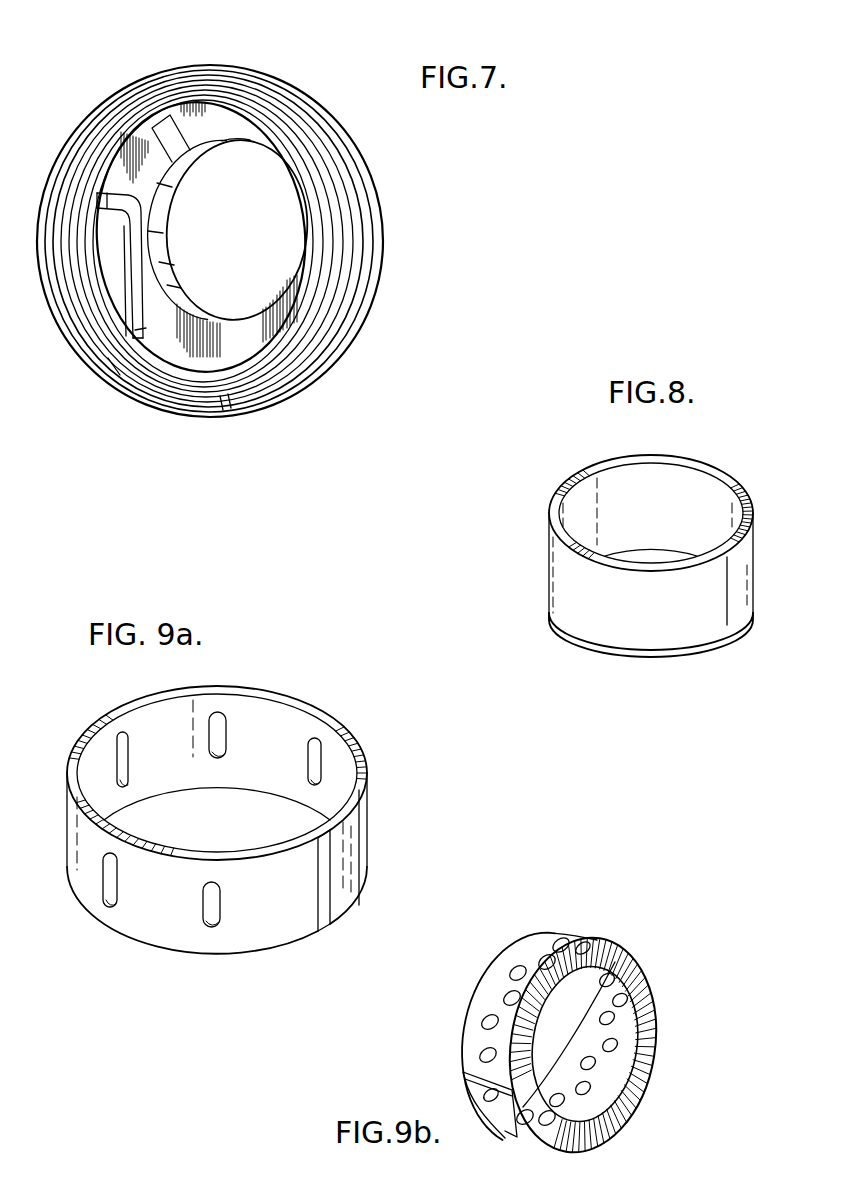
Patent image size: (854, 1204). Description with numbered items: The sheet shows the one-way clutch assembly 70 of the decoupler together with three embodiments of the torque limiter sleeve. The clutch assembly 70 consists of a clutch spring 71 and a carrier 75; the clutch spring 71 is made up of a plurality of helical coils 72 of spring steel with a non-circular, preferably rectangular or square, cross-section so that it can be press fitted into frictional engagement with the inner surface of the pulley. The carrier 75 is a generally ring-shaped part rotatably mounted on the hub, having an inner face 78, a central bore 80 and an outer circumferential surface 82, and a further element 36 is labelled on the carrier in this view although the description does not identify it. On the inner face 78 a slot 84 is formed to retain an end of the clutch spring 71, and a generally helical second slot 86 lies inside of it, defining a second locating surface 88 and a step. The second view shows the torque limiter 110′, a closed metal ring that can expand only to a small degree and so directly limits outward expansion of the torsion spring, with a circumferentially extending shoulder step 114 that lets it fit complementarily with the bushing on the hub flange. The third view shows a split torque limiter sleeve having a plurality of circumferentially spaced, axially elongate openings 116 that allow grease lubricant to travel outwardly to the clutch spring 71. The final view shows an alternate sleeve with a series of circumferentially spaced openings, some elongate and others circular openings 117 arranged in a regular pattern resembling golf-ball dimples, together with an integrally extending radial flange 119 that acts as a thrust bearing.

In FIG. 7, the one-way clutch assembly 70 is at (334, 107).
In FIG. 7, the carrier 75 is at (347, 144).
In FIG. 7, the cylindrical wall 36 is at (380, 211).
In FIG. 7, the outer circumferential surface 82 is at (377, 283).
In FIG. 7, the clutch spring 71 is at (277, 393).
In FIG. 7, the helical coils 72 is at (118, 362).
In FIG. 7, the inner face 78 is at (252, 357).
In FIG. 7, the bore 80 is at (170, 253).
In FIG. 7, the slot 84 is at (130, 200).
In FIG. 7, the second slot 86 is at (213, 142).
In FIG. 7, the second locating surface 88 is at (212, 142).
In FIG. 8, the torque limiter 110′ is at (569, 471).
In FIG. 8, the shoulder step 114 is at (697, 651).
In FIG. 9a, the axially elongate openings 116 is at (218, 760).
In FIG. 9b, the circular openings 117 is at (543, 958).
In FIG. 9b, the radial flange 119 is at (633, 1087).